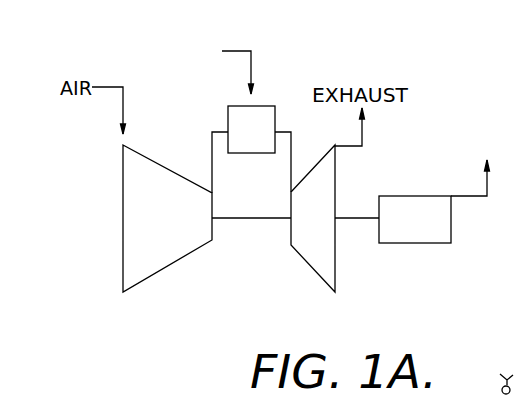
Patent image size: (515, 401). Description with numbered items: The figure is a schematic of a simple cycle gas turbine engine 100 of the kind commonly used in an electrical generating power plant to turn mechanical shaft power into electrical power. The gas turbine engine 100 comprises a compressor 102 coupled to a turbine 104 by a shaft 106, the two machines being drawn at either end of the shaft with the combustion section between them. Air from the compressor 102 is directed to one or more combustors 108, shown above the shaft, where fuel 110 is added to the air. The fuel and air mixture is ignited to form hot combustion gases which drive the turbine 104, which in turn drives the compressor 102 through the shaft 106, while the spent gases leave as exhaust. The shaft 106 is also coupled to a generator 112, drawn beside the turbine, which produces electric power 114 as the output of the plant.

The gas turbine engine 100 is at (457, 31).
The compressor 102 is at (167, 218).
The turbine 104 is at (313, 218).
The shaft 106 is at (255, 218).
The combustor 108 is at (251, 149).
The fuel 110 is at (219, 65).
The generator 112 is at (393, 219).
The electric power 114 is at (475, 168).